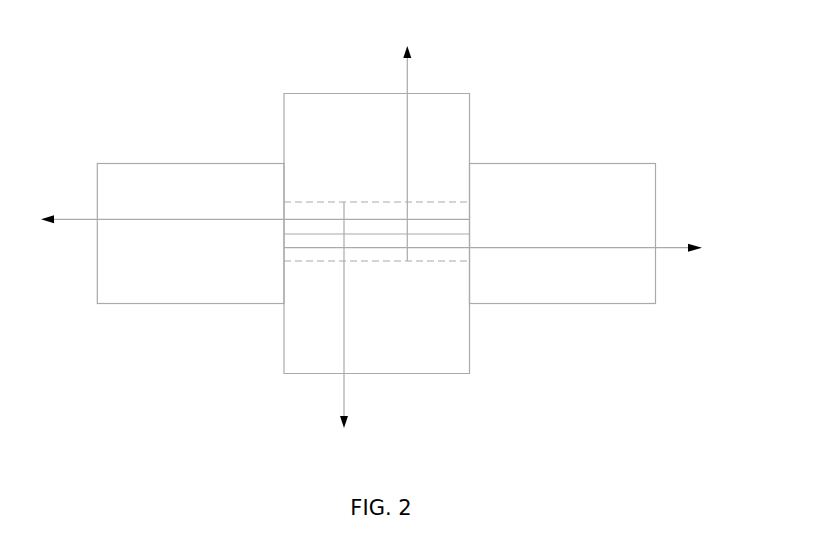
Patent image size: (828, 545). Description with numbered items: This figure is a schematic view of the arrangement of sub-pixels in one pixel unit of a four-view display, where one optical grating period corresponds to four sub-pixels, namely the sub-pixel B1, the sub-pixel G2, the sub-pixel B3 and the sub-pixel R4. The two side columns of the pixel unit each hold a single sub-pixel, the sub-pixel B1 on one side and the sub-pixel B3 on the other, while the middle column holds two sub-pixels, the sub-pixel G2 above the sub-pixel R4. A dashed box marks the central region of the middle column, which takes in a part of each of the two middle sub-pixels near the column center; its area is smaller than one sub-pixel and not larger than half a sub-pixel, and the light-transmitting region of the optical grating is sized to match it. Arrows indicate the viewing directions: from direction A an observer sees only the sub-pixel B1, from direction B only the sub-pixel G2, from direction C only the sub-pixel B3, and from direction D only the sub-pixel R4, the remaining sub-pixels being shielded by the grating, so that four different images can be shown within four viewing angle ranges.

The sub-pixel B1 is at (190, 234).
The sub-pixel G2 is at (377, 148).
The sub-pixel B3 is at (563, 234).
The sub-pixel R4 is at (377, 317).
The direction A is at (507, 249).
The direction B is at (343, 329).
The direction C is at (246, 219).
The direction D is at (407, 142).